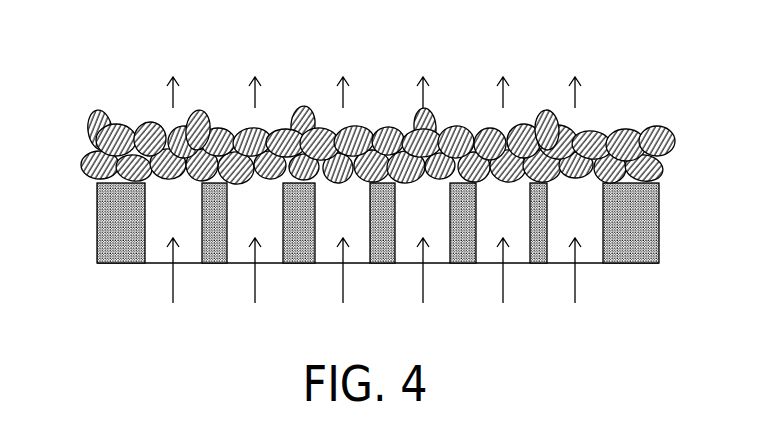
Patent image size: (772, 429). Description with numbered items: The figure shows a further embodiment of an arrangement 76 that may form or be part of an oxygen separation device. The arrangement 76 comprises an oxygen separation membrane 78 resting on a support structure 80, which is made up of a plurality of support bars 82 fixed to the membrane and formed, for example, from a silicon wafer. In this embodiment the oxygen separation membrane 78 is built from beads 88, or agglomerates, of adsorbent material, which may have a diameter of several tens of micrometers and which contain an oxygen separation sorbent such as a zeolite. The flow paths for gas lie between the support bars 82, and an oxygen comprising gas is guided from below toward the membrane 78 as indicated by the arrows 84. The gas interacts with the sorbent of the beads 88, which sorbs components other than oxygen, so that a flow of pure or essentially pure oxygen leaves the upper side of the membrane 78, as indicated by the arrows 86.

The arrangement 76 is at (74, 92).
The oxygen separation membrane 78 is at (674, 140).
The support structure 80 is at (84, 218).
The support bars 82 is at (637, 264).
The arrows 84 is at (576, 294).
The arrows 86 is at (576, 96).
The beads 88 is at (198, 110).